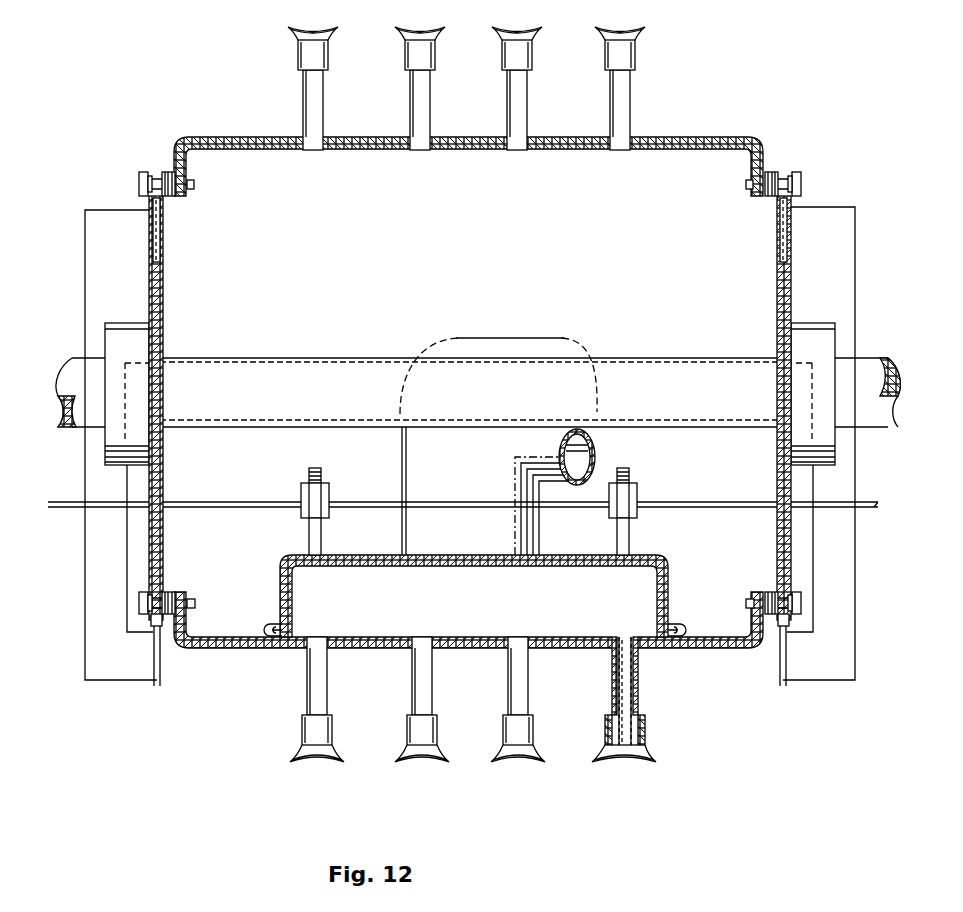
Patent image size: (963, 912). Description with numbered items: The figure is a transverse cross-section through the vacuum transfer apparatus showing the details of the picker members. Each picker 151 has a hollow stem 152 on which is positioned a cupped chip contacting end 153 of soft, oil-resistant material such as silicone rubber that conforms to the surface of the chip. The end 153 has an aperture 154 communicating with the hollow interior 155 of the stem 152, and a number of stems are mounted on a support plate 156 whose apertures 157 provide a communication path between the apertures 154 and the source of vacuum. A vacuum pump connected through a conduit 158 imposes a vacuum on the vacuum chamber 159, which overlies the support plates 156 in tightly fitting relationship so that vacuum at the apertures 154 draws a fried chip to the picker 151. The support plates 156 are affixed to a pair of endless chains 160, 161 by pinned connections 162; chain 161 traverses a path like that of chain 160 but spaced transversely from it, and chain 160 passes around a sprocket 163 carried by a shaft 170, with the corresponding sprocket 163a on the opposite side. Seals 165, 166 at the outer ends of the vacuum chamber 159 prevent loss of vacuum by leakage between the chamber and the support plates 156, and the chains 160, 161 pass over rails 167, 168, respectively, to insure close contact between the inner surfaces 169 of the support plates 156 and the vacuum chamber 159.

The picker 151 is at (642, 700).
The hollow stem 152 is at (635, 672).
The chip contacting end 153 is at (645, 746).
The aperture 154 is at (625, 758).
The hollow interior 155 is at (638, 651).
The support plate 156 is at (758, 648).
The aperture 157 is at (626, 636).
The conduit 158 is at (570, 350).
The vacuum chamber 159 is at (330, 555).
The endless chain 160 is at (160, 176).
The endless chain 161 is at (788, 176).
The pinned connection 162 is at (190, 604).
The sprocket 163 is at (150, 287).
The end plate 163a is at (791, 290).
The seal 165 is at (265, 626).
The seal 166 is at (675, 628).
The rail 167 is at (150, 205).
The rail 168 is at (790, 205).
The inner surface 169 is at (358, 634).
The shaft 170 is at (251, 397).